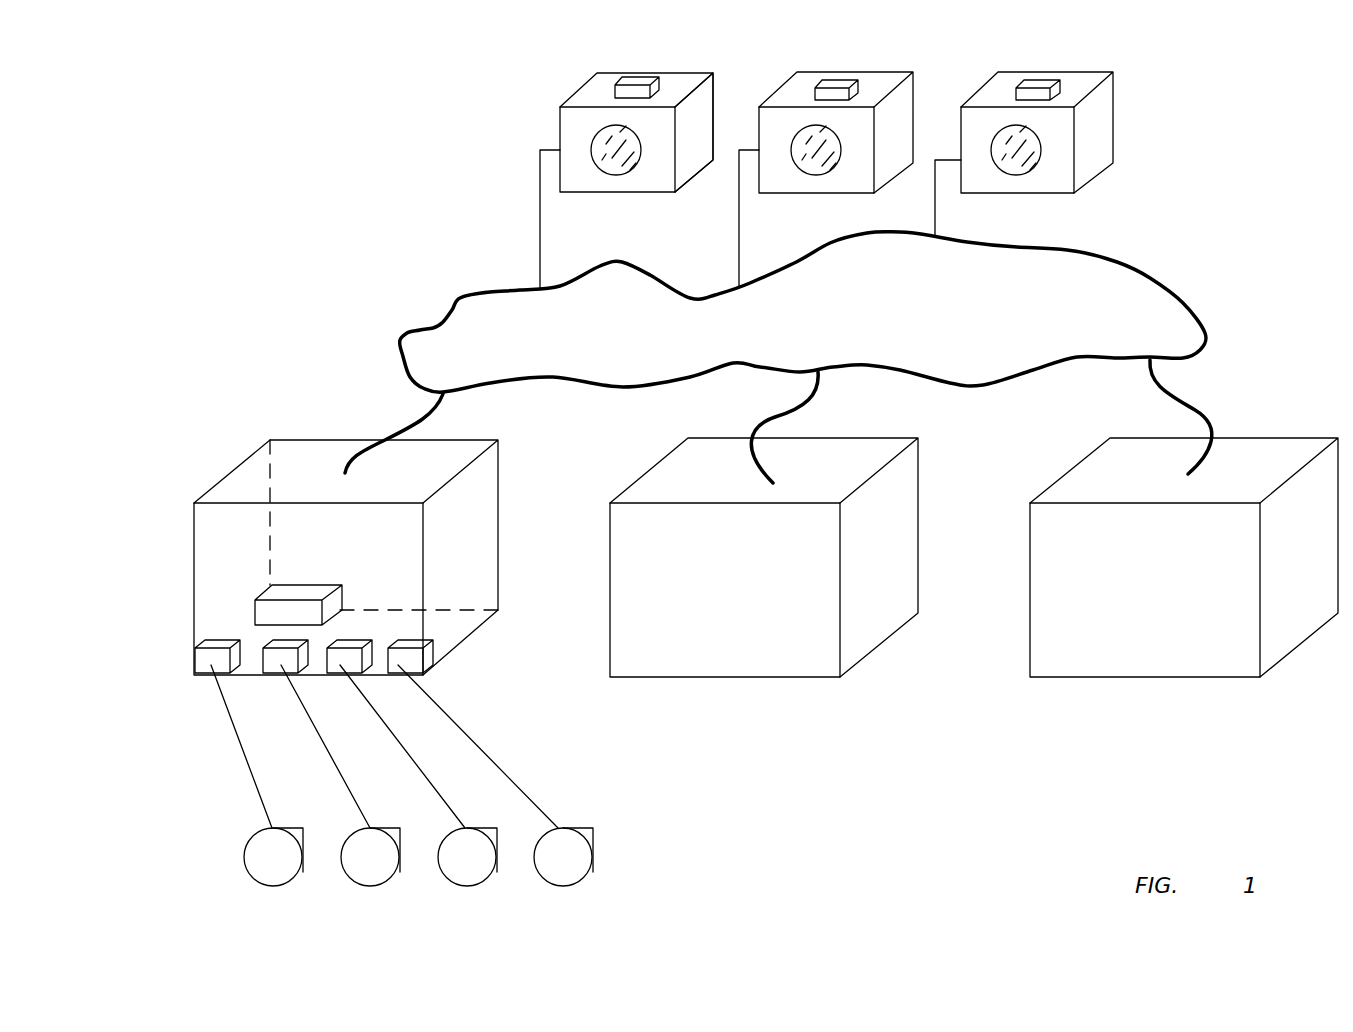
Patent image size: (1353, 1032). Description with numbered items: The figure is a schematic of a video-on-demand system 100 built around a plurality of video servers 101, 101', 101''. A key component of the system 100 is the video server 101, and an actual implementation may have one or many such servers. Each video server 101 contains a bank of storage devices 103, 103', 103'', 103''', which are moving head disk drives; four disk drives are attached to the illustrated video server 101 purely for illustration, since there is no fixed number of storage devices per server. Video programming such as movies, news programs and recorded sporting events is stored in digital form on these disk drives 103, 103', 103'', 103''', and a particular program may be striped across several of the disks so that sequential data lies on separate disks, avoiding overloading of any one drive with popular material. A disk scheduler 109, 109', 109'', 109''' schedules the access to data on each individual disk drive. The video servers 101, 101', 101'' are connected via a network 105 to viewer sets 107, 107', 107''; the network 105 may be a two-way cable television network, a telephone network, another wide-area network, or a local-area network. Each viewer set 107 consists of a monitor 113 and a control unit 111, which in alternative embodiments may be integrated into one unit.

The video-on-demand system 100 is at (284, 118).
The video server 101 is at (341, 545).
The video server 101' is at (741, 557).
The video server 101'' is at (1166, 554).
The storage device 103 is at (243, 857).
The storage device 103' is at (348, 840).
The storage device 103'' is at (441, 840).
The storage device 103''' is at (617, 857).
The network 105 is at (460, 298).
The viewer set 107 is at (672, 111).
The viewer set 107' is at (875, 110).
The viewer set 107'' is at (1081, 114).
The disk scheduler 109 is at (209, 734).
The disk scheduler 109' is at (311, 734).
The disk scheduler 109'' is at (396, 734).
The disk scheduler 109''' is at (473, 734).
The control unit 111 is at (633, 82).
The monitor 113 is at (687, 182).